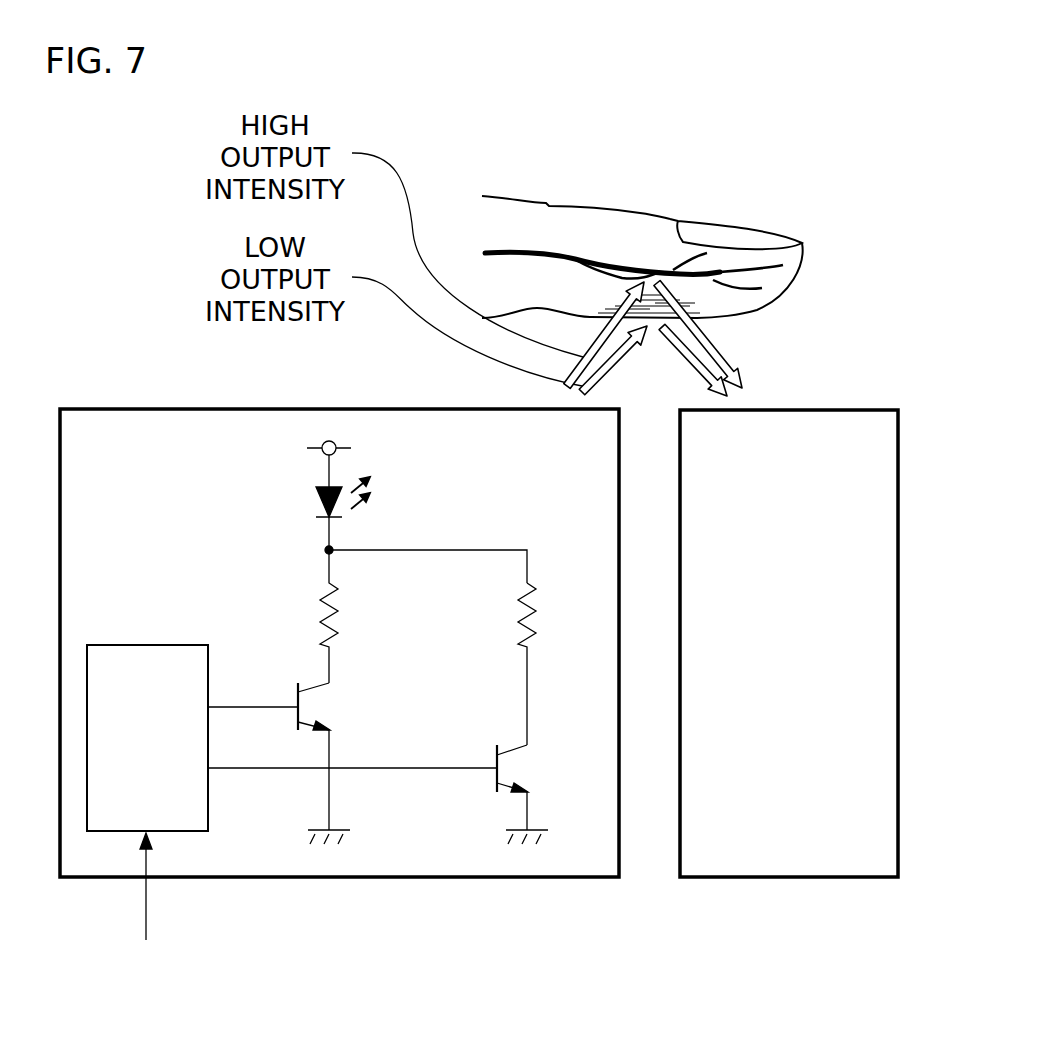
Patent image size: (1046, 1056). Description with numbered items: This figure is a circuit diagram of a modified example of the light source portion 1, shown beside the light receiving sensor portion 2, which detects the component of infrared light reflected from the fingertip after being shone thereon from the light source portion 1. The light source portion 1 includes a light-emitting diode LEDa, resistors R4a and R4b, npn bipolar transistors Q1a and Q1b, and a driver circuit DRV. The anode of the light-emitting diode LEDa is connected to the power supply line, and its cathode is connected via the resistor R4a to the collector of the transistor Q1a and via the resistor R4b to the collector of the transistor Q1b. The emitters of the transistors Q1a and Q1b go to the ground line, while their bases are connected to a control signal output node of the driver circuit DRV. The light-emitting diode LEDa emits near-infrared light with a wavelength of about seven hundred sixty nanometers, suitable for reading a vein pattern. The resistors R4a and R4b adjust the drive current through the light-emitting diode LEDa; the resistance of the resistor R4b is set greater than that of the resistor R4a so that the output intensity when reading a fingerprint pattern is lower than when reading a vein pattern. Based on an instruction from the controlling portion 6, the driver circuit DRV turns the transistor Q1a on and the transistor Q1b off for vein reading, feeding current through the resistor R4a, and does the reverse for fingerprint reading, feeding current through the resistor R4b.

The light source portion 1 is at (338, 409).
The light receiving sensor portion 2 is at (822, 410).
The controlling portion 6 is at (146, 923).
The light-emitting diode LEDa is at (313, 505).
The resistor R4a is at (313, 613).
The resistor R4b is at (513, 613).
The npn bipolar transistor Q1a is at (296, 727).
The npn bipolar transistor Q1b is at (494, 787).
The driver circuit DRV is at (147, 644).